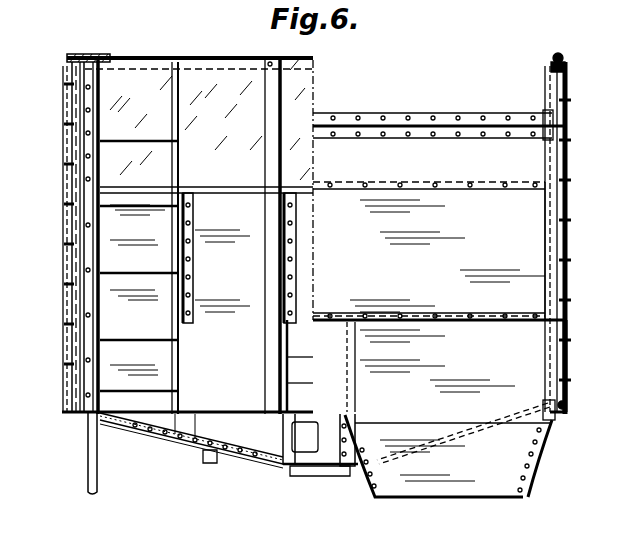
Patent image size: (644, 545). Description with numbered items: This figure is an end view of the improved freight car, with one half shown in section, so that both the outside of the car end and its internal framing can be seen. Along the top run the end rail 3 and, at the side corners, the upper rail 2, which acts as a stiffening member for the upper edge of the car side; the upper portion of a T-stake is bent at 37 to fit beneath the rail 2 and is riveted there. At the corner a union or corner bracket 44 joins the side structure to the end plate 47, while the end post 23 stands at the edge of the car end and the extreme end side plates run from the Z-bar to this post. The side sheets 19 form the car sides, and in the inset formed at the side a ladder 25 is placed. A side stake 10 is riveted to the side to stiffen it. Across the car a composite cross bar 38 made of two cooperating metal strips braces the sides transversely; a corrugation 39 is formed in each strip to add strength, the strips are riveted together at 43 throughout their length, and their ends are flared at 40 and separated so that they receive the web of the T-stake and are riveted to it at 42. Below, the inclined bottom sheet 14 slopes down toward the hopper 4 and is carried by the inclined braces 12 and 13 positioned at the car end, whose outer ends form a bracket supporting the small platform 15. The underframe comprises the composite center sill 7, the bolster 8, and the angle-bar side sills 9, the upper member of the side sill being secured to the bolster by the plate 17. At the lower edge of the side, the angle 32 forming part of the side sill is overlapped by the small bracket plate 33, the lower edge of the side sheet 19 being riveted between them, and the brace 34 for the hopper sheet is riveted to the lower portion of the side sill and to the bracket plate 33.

The upper rail 2 is at (563, 58).
The end rail 3 is at (184, 56).
The hopper 4 is at (458, 480).
The composite center sill 7 is at (283, 464).
The bolster 8 is at (245, 430).
The side sill 9 is at (86, 417).
The side stake 10 is at (569, 292).
The inclined brace 12 is at (289, 200).
The inclined brace 13 is at (192, 200).
The inclined bottom sheet 14 is at (379, 297).
The small platform 15 is at (228, 186).
The plate 17 is at (183, 440).
The side sheet 19 is at (64, 186).
The end post 23 is at (90, 299).
The ladder 25 is at (76, 239).
The angle 32 is at (568, 405).
The bracket plate 33 is at (547, 404).
The brace 34 is at (533, 466).
The bent upper end of T-stake 37 is at (562, 70).
The composite cross bar 38 is at (441, 118).
The corrugation 39 is at (424, 130).
The flared end 40 is at (546, 113).
The rivet 42 is at (568, 120).
The rivet 43 is at (358, 117).
The corner bracket 44 is at (70, 56).
The end plate 47 is at (217, 93).